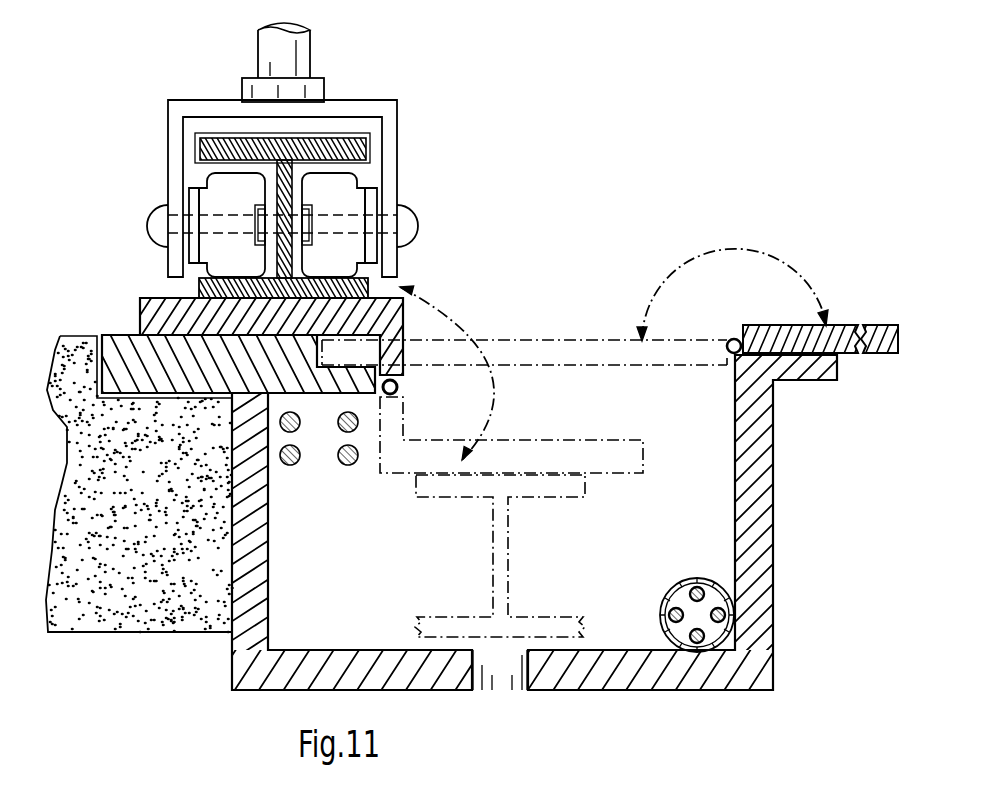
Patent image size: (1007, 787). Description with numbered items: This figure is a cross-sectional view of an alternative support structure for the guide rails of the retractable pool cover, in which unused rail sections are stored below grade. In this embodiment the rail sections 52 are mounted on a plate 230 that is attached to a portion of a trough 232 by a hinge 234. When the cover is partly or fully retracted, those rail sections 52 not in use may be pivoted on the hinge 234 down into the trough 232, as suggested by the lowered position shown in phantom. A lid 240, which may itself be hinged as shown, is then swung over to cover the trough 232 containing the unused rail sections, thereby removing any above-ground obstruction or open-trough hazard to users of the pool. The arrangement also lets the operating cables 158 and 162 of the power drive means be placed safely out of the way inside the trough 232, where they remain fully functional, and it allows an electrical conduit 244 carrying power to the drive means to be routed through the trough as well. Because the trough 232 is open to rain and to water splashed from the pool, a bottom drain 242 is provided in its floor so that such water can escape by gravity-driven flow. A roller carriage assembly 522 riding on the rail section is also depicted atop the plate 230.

The roller carriage assembly 522 is at (322, 145).
The plate 230 is at (158, 298).
The hinge 234 is at (400, 387).
The lid 240 is at (847, 325).
The trough 232 is at (780, 463).
The electrical conduit 244 is at (718, 582).
The operating cable 158 is at (300, 417).
The second cable 162 is at (358, 422).
The rail sections 52 is at (578, 645).
The bottom drain 242 is at (503, 692).